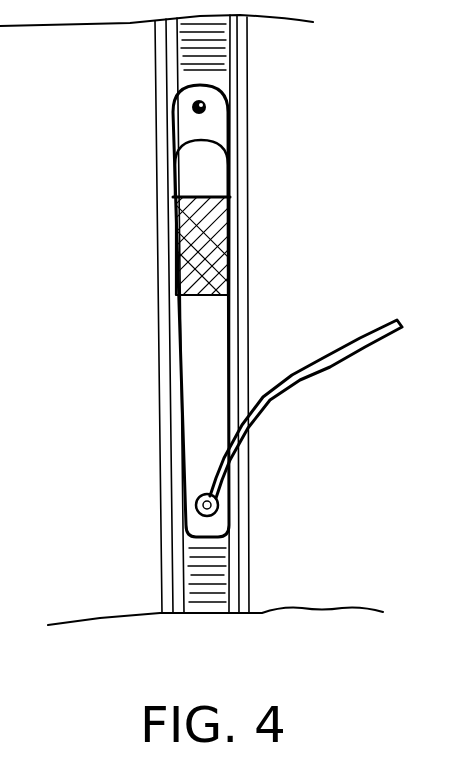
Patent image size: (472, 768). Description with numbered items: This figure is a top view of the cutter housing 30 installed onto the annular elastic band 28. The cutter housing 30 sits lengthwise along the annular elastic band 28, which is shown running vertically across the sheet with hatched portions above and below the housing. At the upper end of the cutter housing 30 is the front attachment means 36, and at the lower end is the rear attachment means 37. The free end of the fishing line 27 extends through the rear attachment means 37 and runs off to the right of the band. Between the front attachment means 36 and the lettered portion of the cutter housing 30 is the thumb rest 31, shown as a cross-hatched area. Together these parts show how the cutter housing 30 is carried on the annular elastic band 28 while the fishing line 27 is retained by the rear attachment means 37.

The fishing line 27 is at (333, 366).
The annular elastic band 28 is at (238, 50).
The cutter housing 30 is at (192, 403).
The thumb rest 31 is at (172, 228).
The front attachment means 36 is at (205, 110).
The rear attachment means 37 is at (218, 494).